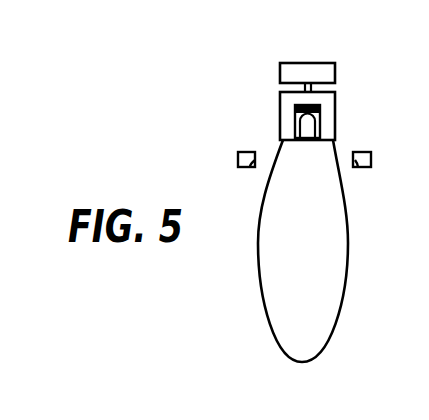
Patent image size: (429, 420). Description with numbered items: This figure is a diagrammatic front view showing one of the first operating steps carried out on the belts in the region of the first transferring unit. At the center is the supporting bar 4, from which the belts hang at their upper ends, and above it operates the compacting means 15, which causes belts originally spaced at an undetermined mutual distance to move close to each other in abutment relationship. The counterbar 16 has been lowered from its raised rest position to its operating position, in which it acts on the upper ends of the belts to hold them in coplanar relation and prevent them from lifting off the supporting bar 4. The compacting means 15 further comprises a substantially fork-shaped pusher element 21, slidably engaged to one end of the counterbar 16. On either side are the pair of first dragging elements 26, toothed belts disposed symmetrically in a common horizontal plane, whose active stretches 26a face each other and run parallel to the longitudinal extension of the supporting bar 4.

The supporting bar 4 is at (307, 143).
The compacting means 15 is at (272, 68).
The counterbar 16 is at (327, 70).
The fork-shaped pusher element 21 is at (287, 121).
The first dragging elements 26 is at (238, 158).
The active stretches 26a is at (258, 162).